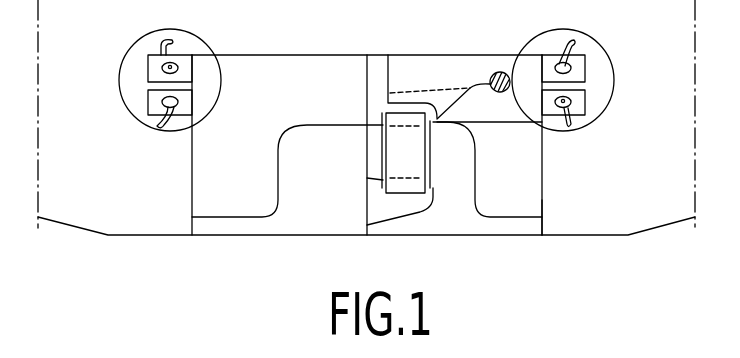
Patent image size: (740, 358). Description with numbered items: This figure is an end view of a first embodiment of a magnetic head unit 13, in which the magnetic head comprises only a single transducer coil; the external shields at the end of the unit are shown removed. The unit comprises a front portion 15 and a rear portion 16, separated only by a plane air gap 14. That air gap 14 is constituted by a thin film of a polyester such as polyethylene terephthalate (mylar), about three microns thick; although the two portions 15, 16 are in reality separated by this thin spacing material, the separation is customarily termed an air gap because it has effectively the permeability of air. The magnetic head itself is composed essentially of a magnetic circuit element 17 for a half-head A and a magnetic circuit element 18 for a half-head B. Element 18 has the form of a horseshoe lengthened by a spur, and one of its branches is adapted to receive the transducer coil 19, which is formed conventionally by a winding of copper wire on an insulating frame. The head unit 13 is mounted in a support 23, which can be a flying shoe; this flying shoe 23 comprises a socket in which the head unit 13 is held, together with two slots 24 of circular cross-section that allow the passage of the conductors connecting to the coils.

The magnetic head unit 13 is at (312, 272).
The air gap 14 is at (372, 235).
The front portion 15 is at (272, 235).
The rear portion 16 is at (467, 235).
The magnetic circuit element 17 is at (278, 160).
The magnetic circuit element 18 is at (480, 187).
The transducer coil 19 is at (384, 109).
The support 23 is at (607, 237).
The slots 24 is at (595, 45).